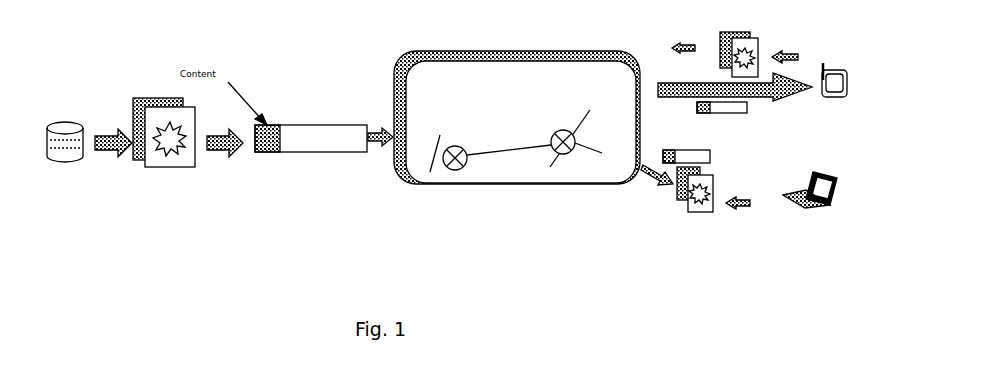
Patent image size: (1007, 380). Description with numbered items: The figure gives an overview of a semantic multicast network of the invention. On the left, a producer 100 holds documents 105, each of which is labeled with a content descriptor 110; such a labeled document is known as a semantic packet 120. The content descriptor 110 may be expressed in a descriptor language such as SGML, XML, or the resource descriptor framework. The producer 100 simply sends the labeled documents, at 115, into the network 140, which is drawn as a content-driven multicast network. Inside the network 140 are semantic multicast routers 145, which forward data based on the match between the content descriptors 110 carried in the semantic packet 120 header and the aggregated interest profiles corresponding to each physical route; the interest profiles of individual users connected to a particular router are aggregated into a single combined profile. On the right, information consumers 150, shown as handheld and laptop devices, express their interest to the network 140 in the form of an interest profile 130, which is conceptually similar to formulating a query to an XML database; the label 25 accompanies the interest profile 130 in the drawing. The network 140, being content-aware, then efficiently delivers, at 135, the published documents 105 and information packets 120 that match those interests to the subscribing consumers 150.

The producer 100 is at (70, 167).
The document 105 is at (445, 125).
The content descriptor 110 is at (267, 51).
The sending into the network 115 is at (225, 154).
The semantic packet 120 is at (311, 149).
The interest profile 130 is at (800, 52).
The receiving content 135 is at (673, 102).
The network 140 is at (460, 72).
The semantic multicast router 145 is at (460, 175).
The consumer 150 is at (860, 88).
The interest profile 25 is at (834, 25).